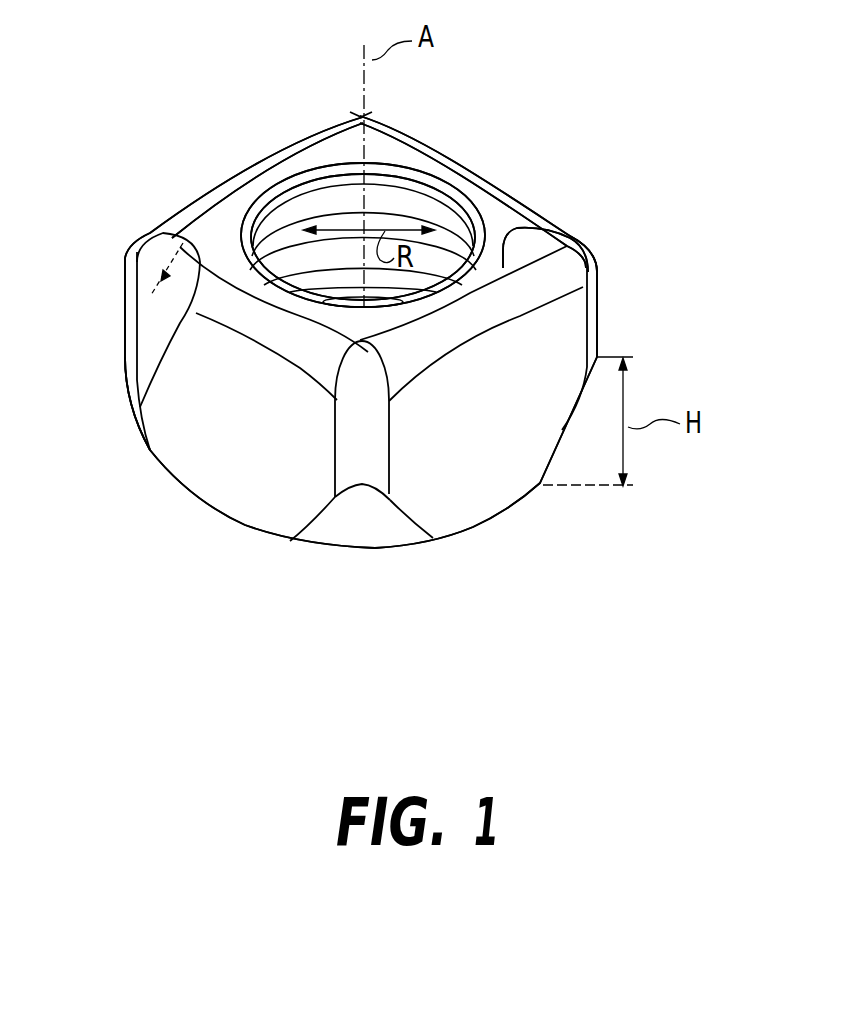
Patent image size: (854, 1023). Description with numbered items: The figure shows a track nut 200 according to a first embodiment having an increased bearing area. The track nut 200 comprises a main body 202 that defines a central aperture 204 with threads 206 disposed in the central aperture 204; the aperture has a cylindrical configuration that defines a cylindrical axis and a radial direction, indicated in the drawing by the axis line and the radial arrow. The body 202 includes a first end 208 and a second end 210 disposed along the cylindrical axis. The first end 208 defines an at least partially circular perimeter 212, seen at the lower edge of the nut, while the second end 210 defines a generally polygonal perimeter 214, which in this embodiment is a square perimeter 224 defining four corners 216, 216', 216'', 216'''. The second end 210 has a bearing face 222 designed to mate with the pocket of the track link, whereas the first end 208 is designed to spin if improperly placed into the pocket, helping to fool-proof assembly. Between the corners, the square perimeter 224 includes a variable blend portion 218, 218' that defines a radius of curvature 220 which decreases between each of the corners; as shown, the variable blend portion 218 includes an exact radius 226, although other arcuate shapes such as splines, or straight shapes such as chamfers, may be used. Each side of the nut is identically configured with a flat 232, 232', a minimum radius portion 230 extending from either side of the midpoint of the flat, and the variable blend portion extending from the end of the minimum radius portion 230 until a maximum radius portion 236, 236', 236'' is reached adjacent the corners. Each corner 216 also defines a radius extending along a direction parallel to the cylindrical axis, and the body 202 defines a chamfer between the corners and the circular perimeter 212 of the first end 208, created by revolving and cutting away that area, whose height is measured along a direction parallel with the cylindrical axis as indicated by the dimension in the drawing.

The track nut 200 is at (575, 104).
The main body 202 is at (575, 104).
The central aperture 204 is at (390, 197).
The threads 206 is at (390, 197).
The first end 208 is at (400, 548).
The second end 210 is at (218, 217).
The circular perimeter 212 is at (400, 548).
The polygonal perimeter 214 is at (480, 280).
The corner 216 is at (90, 351).
The corner 216' is at (409, 448).
The corner 216'' is at (634, 349).
The corner 216''' is at (335, 58).
The variable blend portion 218 is at (121, 413).
The variable blend portion 218' is at (486, 352).
The radius of curvature 220 is at (147, 258).
The bearing face 222 is at (218, 217).
The square perimeter 224 is at (480, 280).
The exact radius 226 is at (182, 285).
The minimum radius portion 230 is at (250, 337).
The flat 232 is at (296, 505).
The flat 232' is at (442, 506).
The maximum radius portion 236 is at (138, 200).
The maximum radius portion 236' is at (360, 489).
The maximum radius portion 236'' is at (668, 260).